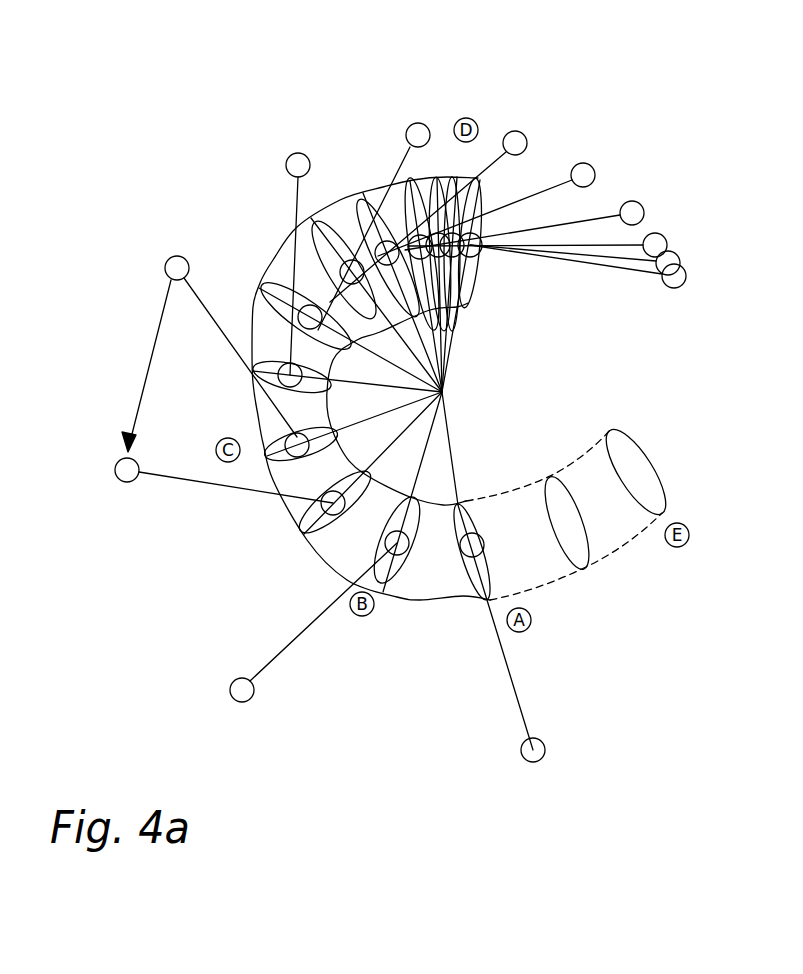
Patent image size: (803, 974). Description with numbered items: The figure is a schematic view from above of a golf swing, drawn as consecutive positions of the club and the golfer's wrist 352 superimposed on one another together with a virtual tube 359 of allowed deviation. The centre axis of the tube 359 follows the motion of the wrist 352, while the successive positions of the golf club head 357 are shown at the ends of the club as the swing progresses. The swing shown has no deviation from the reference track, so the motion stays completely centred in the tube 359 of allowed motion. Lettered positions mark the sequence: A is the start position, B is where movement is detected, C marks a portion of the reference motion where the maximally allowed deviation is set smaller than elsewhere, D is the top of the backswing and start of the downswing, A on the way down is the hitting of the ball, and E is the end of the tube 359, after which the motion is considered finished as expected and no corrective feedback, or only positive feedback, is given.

The wrist 352 is at (297, 523).
The golf club head 357 is at (412, 124).
The tube of allowed motion 359 is at (550, 590).